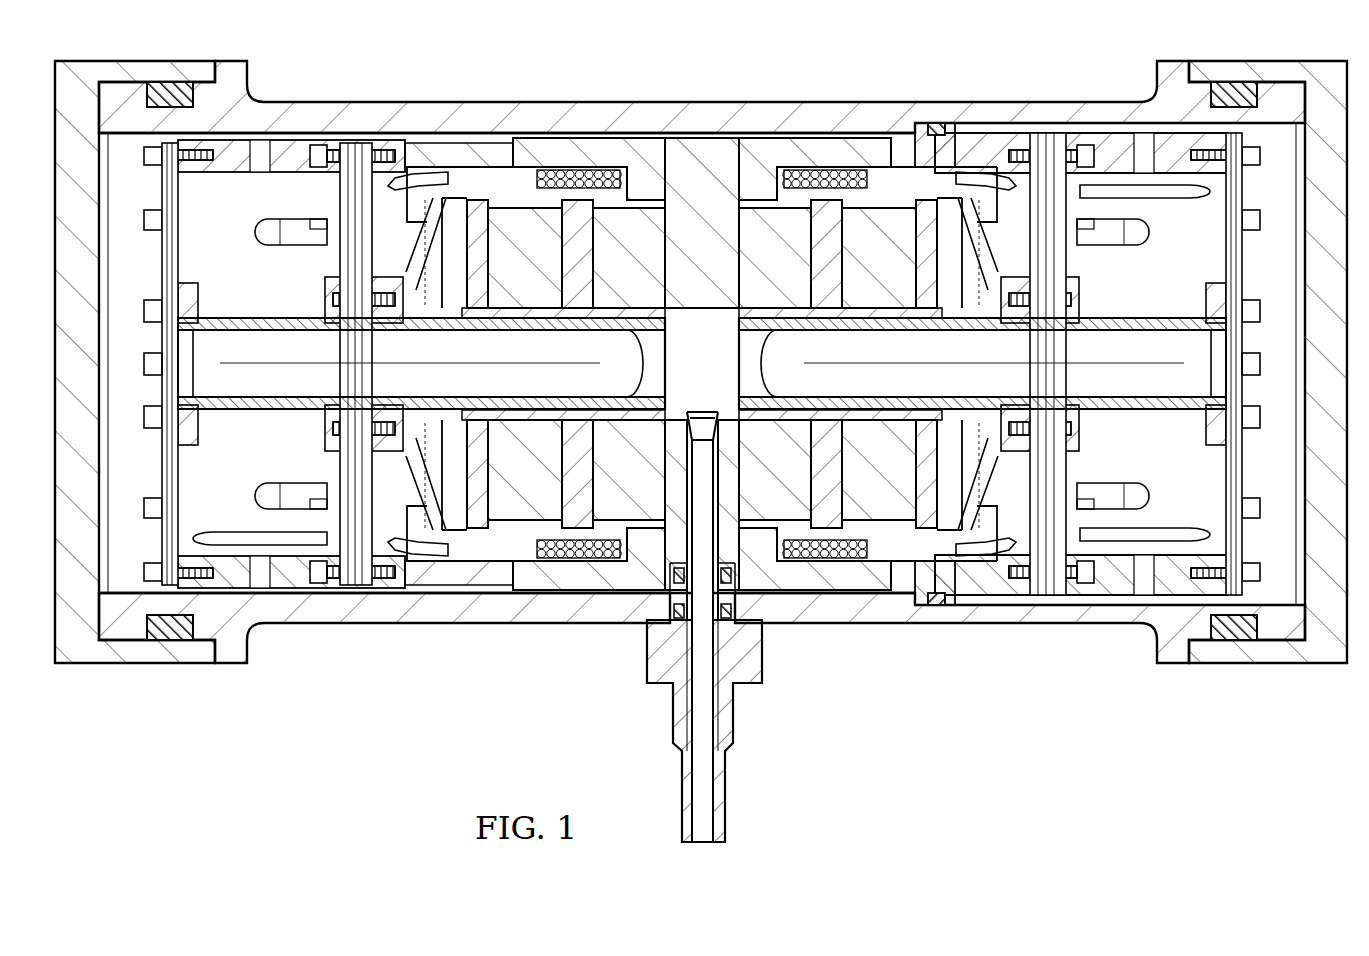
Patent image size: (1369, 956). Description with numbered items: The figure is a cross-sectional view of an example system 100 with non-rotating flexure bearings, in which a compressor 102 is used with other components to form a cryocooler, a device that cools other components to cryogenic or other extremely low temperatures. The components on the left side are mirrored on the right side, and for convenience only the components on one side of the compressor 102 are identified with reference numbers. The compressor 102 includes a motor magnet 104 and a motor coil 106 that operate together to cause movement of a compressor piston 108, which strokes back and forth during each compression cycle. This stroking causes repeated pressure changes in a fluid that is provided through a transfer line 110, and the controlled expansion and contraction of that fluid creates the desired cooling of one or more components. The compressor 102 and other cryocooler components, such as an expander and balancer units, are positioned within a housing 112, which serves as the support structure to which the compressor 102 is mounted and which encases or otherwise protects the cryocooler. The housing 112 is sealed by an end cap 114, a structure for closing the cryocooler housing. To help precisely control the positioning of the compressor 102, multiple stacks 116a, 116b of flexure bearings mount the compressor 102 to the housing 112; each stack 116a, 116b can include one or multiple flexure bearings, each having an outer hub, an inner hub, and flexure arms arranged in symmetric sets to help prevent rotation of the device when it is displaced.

The system 100 is at (379, 729).
The compressor 102 is at (734, 139).
The motor magnet 104 is at (497, 215).
The motor coil 106 is at (601, 165).
The compressor piston 108 is at (421, 377).
The transfer line 110 is at (704, 722).
The housing 112 is at (462, 612).
The end cap 114 is at (132, 657).
The stack of flexure bearings 116a is at (180, 203).
The stack of flexure bearings 116b is at (337, 256).